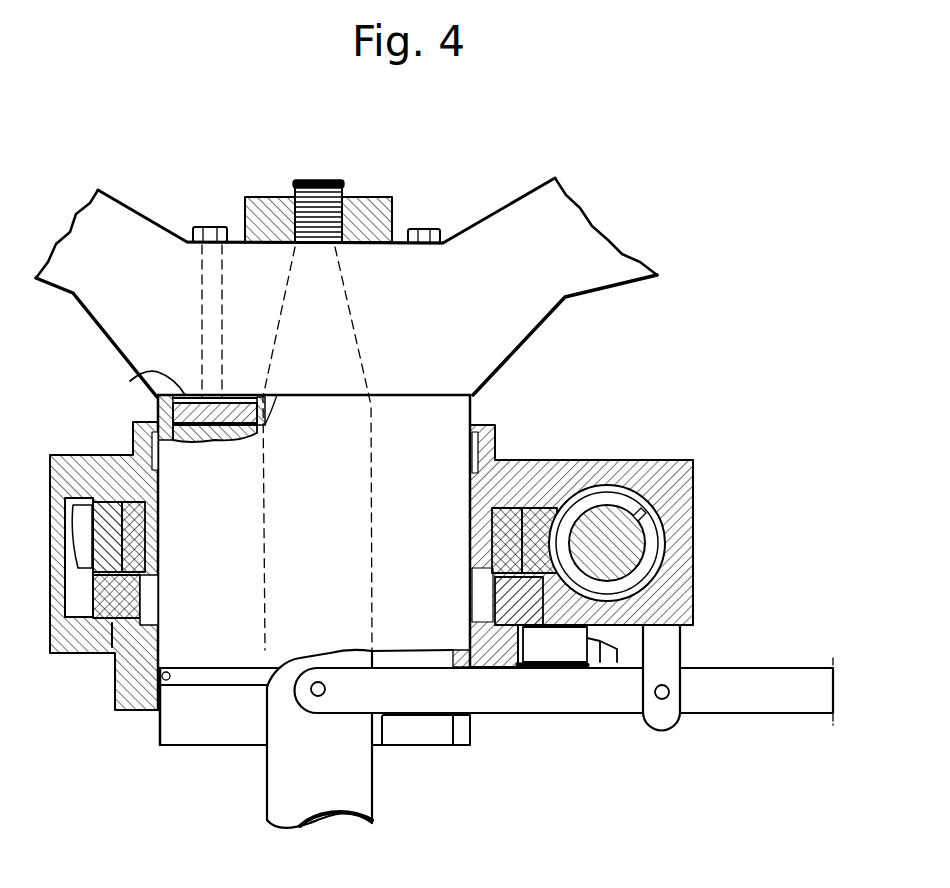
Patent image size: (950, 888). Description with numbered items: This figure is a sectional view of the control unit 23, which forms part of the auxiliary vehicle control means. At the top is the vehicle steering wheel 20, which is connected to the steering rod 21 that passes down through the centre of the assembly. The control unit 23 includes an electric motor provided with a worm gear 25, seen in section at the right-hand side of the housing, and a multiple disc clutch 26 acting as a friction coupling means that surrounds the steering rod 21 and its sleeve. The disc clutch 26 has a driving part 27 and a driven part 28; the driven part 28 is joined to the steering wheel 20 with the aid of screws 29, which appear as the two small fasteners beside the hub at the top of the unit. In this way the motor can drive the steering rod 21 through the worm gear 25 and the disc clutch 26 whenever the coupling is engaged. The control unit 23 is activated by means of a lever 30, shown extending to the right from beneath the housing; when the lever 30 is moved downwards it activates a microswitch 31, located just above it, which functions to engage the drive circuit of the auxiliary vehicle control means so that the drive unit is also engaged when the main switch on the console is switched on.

The vehicle steering wheel 20 is at (532, 210).
The steering rod 21 is at (280, 770).
The control unit 23 is at (582, 442).
The worm gear 25 is at (627, 527).
The multiple disc clutch 26 is at (170, 727).
The driving part 27 is at (157, 413).
The driven part 28 is at (131, 381).
The screws 29 is at (210, 232).
The lever 30 is at (727, 687).
The microswitch 31 is at (555, 653).